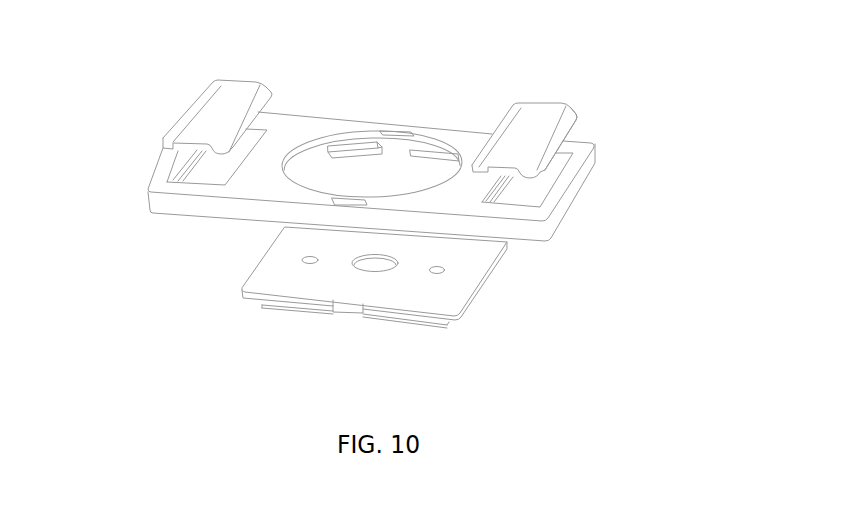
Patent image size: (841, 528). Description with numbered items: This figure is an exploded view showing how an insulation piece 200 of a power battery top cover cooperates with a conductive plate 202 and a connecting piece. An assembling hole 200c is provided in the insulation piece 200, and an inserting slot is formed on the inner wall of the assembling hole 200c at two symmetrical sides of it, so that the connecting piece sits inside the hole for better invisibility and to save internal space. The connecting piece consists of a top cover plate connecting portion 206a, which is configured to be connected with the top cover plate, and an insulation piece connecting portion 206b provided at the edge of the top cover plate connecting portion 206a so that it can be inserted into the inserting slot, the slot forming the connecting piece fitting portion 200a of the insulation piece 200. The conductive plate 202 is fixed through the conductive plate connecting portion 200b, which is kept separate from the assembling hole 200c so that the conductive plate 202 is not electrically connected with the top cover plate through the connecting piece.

The insulation piece 200 is at (213, 208).
The connecting piece fitting portion 200a is at (495, 180).
The conductive plate connecting portion 200b is at (377, 140).
The assembling hole 200c is at (210, 160).
The conductive plate 202 is at (473, 274).
The top cover plate connecting portion 206a is at (528, 135).
The insulation piece connecting portion 206b is at (575, 118).